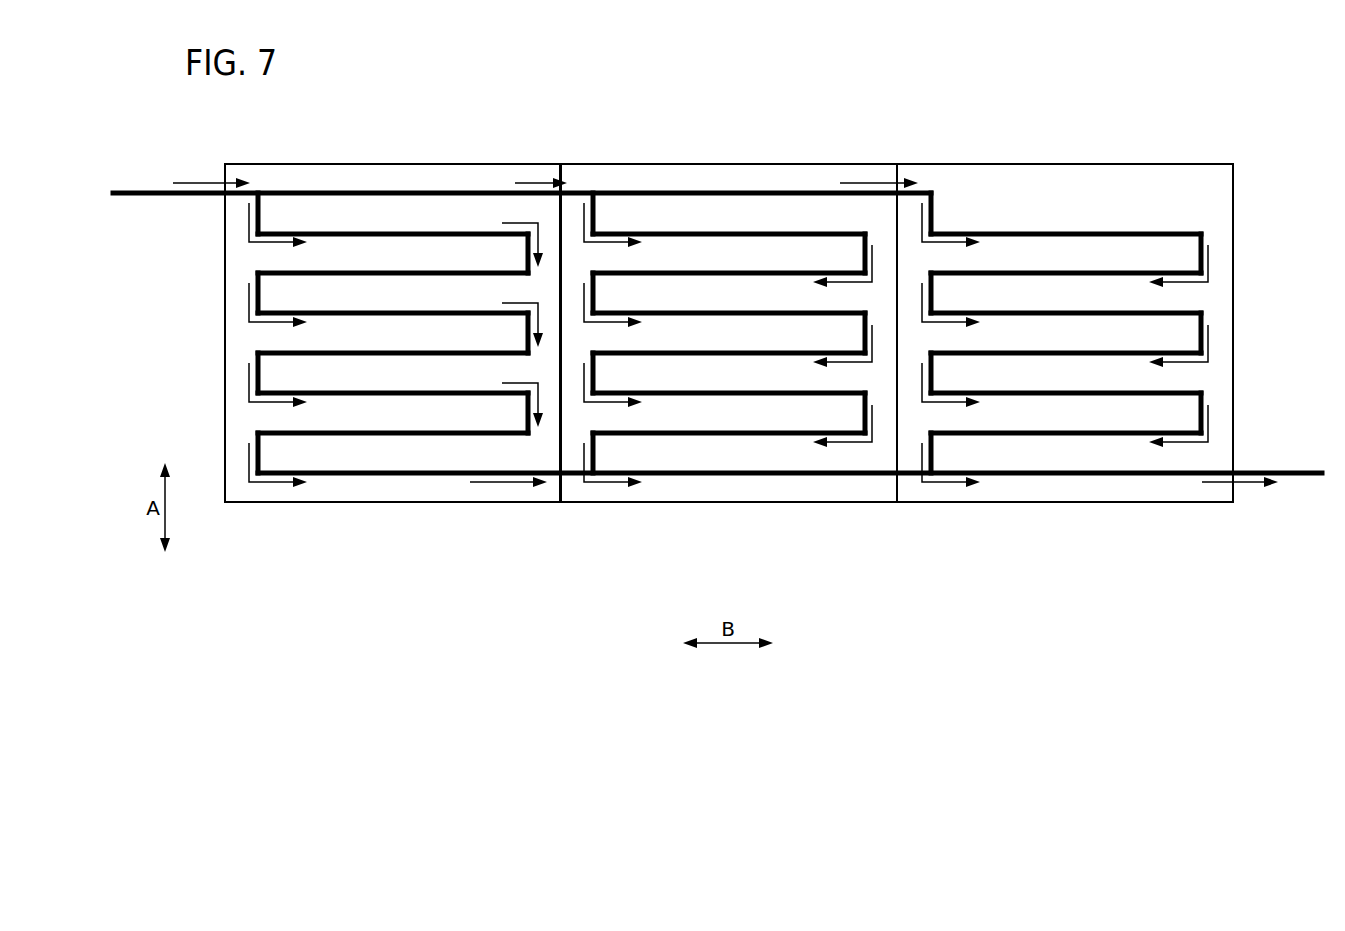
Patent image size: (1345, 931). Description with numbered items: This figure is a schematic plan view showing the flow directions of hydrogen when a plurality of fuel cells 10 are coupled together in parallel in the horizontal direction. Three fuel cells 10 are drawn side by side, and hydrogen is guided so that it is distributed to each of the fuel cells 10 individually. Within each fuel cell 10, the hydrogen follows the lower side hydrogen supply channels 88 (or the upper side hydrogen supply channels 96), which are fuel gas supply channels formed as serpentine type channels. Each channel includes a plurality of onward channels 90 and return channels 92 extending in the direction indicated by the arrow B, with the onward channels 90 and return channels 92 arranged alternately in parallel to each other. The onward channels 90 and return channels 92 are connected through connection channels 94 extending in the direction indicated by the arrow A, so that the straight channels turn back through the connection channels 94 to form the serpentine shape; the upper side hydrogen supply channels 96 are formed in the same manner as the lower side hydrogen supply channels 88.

The fuel cell 10 is at (470, 164).
The lower side hydrogen supply channel 88 is at (790, 526).
The onward channel 90 is at (433, 312).
The return channel 92 is at (303, 275).
The connection channel 94 is at (256, 440).
The upper side hydrogen supply channel 96 is at (364, 475).